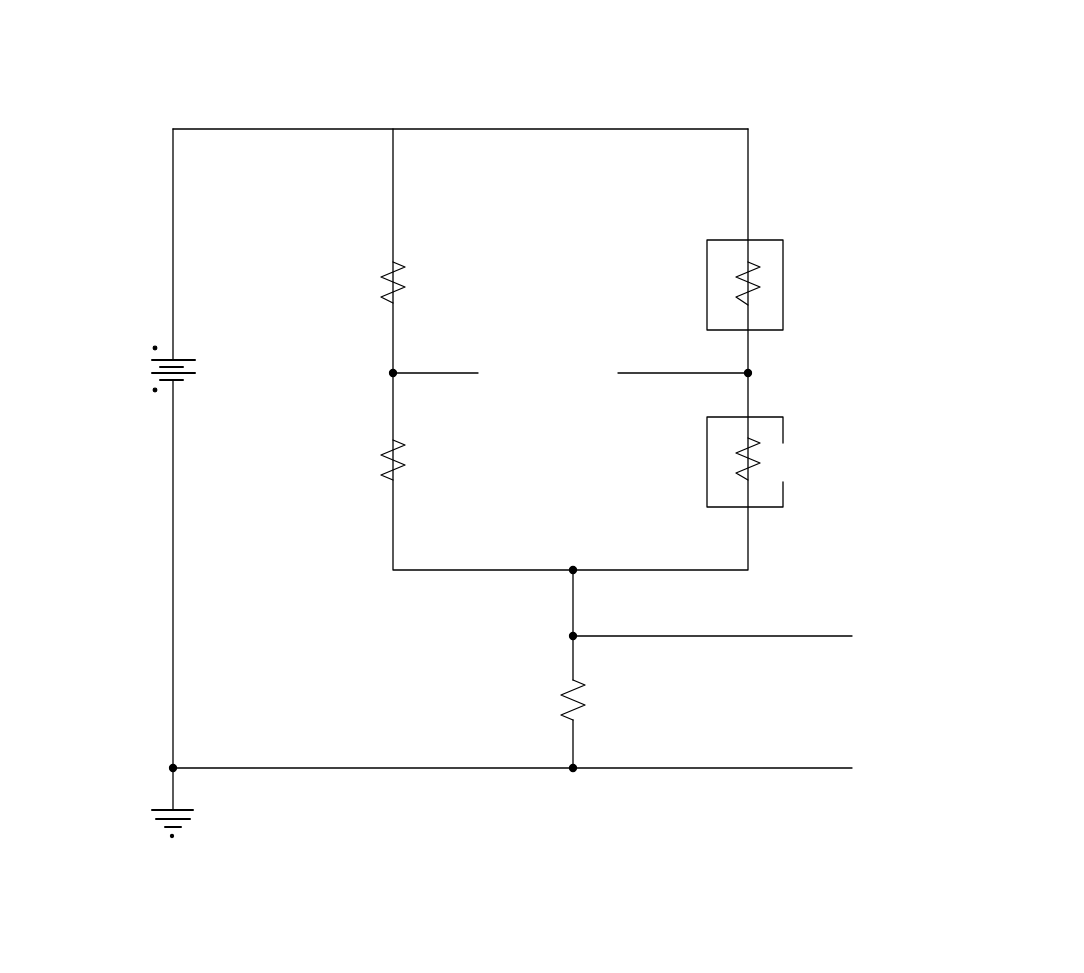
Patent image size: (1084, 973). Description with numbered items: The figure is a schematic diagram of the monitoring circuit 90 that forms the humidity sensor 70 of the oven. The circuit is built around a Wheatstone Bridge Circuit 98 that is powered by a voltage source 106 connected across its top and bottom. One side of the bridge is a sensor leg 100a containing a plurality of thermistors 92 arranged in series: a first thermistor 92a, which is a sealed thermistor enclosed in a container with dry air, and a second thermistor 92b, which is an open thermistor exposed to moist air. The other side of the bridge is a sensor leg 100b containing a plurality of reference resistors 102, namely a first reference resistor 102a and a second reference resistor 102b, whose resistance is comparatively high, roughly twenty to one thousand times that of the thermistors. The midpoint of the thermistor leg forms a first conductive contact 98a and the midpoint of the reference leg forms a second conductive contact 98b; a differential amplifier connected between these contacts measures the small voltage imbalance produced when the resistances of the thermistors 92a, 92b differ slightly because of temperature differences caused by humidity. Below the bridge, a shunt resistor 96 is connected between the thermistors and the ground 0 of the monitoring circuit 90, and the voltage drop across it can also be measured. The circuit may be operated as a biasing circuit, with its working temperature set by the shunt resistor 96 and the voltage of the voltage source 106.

The humidity sensor 70 is at (815, 60).
The monitoring circuit 90 is at (498, 448).
The thermistors 92 is at (809, 373).
The first thermistor 92a is at (783, 280).
The second thermistor 92b is at (783, 424).
The shunt resistor 96 is at (560, 690).
The Wheatstone Bridge Circuit 98 is at (405, 100).
The first conductive contact 98a is at (637, 376).
The second conductive contact 98b is at (475, 370).
The sensor leg 100a is at (688, 313).
The sensor leg 100b is at (357, 377).
The reference resistors 102 is at (323, 362).
The first reference resistor 102a is at (385, 270).
The second reference resistor 102b is at (390, 447).
The voltage source 106 is at (160, 361).
The ground 0 is at (175, 811).